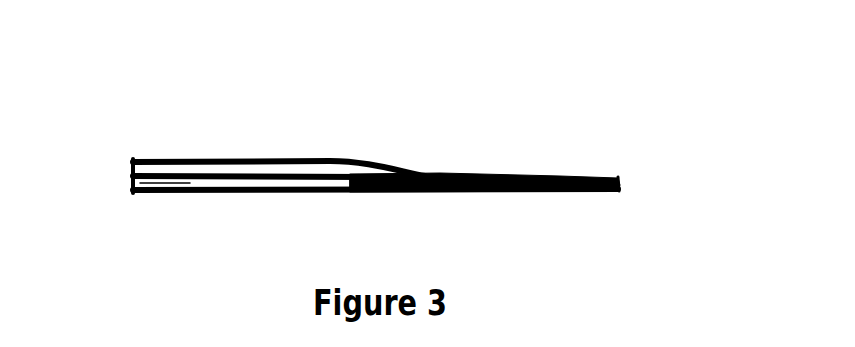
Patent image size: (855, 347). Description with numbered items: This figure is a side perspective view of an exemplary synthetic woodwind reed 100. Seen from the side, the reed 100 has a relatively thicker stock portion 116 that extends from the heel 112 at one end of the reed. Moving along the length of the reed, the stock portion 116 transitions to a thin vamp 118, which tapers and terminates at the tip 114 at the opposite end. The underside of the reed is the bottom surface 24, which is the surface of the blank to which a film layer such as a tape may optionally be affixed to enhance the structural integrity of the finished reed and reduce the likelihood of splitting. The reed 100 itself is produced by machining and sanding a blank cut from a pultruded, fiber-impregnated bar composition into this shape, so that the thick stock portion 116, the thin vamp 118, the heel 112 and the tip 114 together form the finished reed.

The woodwind reed 100 is at (410, 143).
The stock portion 116 is at (231, 159).
The vamp 118 is at (498, 177).
The bottom surface 24 is at (373, 192).
The heel 112 is at (133, 172).
The tip 114 is at (618, 182).